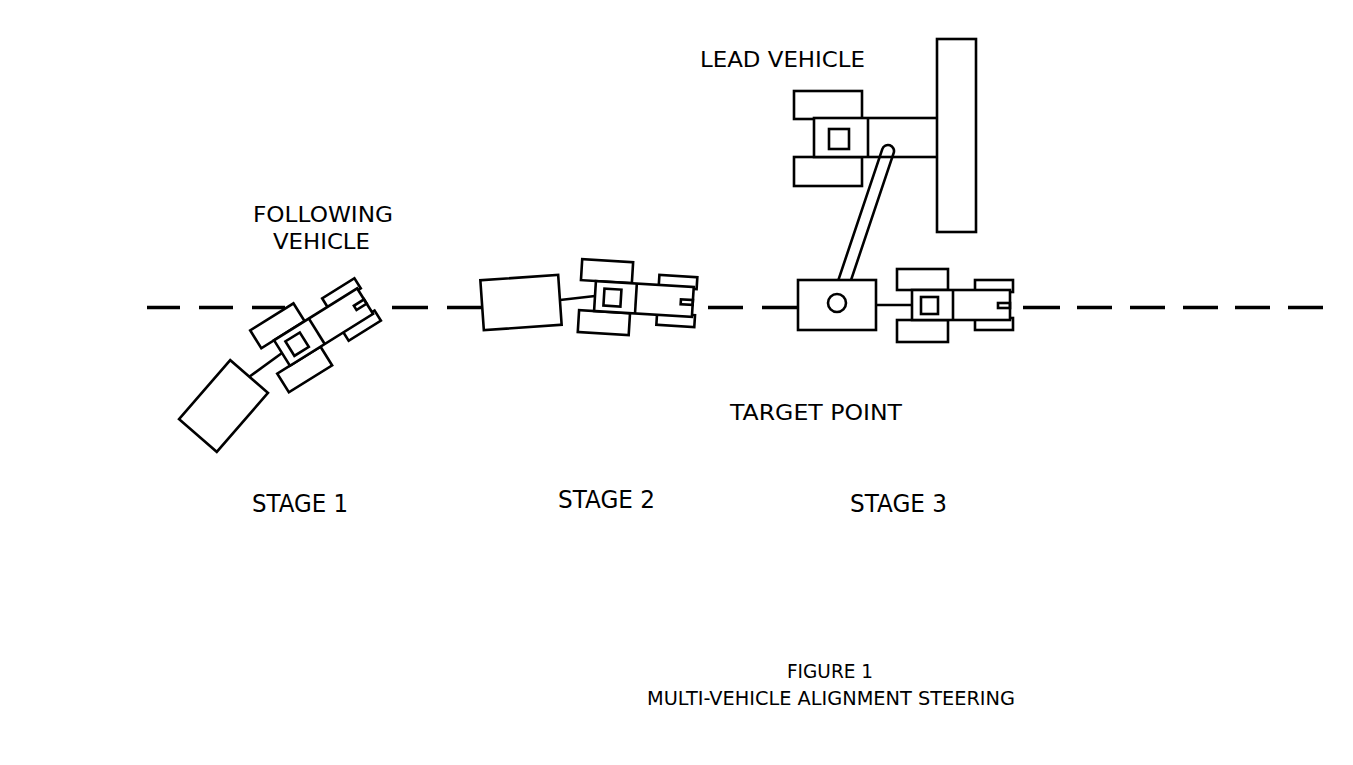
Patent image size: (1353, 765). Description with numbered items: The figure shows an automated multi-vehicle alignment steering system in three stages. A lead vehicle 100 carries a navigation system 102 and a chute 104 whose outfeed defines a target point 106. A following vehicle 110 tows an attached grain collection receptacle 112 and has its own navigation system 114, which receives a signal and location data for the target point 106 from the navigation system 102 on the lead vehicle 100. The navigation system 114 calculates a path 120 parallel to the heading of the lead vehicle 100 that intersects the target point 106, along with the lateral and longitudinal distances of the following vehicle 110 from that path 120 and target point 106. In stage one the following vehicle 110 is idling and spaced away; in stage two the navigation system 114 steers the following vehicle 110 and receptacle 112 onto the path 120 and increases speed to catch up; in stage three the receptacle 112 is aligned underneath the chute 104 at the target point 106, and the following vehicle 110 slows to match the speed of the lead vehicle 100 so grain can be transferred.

The lead vehicle 100 is at (977, 70).
The navigation system 102 is at (827, 137).
The chute 104 is at (870, 228).
The target point 106 is at (830, 312).
The following vehicle 110 is at (333, 342).
The grain collection receptacle 112 is at (245, 423).
The navigation system 114 is at (277, 350).
The parallel path 120 is at (1133, 306).